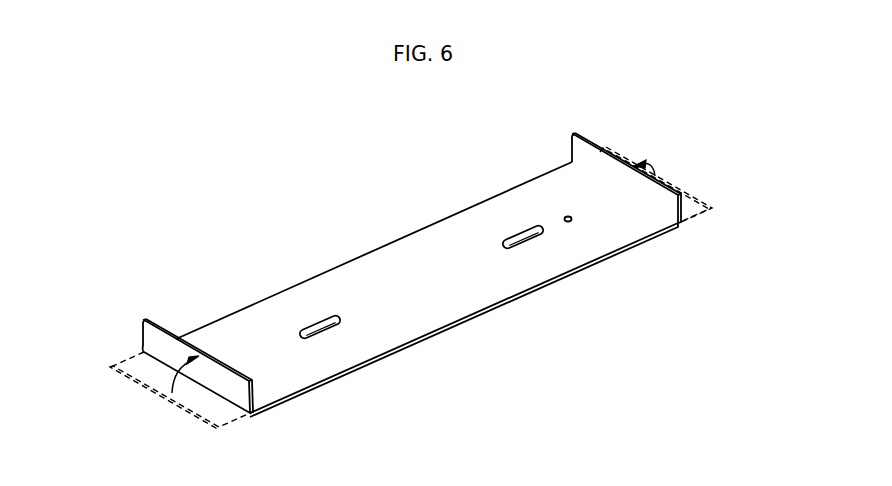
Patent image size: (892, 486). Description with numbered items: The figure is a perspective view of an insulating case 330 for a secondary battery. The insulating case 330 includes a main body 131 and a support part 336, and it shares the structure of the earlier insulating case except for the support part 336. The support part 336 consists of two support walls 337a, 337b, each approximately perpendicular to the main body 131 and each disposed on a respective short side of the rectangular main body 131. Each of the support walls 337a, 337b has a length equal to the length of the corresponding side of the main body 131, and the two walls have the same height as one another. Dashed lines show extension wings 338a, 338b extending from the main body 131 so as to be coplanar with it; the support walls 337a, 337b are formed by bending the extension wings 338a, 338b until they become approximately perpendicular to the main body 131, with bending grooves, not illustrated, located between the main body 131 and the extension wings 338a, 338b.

The insulating case 330 is at (116, 271).
The support part 336 is at (466, 113).
The main body 131 is at (580, 248).
The support wall 337a is at (190, 336).
The support wall 337b is at (571, 142).
The extension wing 338a is at (188, 397).
The extension wing 338b is at (715, 212).